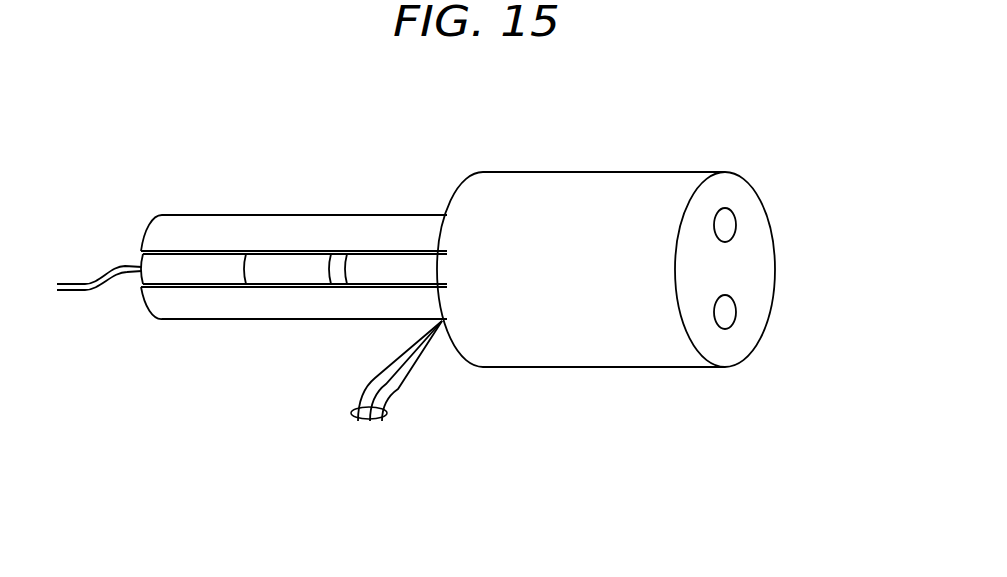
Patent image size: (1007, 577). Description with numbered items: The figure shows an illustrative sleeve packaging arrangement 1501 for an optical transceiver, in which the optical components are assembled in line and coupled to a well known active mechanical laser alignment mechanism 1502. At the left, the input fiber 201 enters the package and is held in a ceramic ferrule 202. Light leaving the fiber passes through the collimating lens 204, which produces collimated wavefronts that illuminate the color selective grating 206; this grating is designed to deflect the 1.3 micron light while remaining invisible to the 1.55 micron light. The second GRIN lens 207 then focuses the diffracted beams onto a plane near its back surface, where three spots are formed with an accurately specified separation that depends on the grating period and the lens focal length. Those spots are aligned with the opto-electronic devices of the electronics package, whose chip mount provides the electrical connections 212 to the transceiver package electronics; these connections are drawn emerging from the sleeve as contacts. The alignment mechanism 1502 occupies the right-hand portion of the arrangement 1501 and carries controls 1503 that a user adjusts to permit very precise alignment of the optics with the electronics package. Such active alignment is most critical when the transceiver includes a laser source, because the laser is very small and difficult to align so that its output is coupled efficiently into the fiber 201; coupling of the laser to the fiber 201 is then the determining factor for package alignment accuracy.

The input fiber 201 is at (65, 282).
The ceramic ferrule 202 is at (193, 272).
The collimating lens 204 is at (288, 270).
The color selective grating 206 is at (338, 270).
The second GRIN lens 207 is at (388, 265).
The electrical connections 212 is at (350, 411).
The sleeve packaging arrangement 1501 is at (782, 462).
The active mechanical laser alignment mechanism 1502 is at (577, 188).
The controls 1503 is at (737, 225).